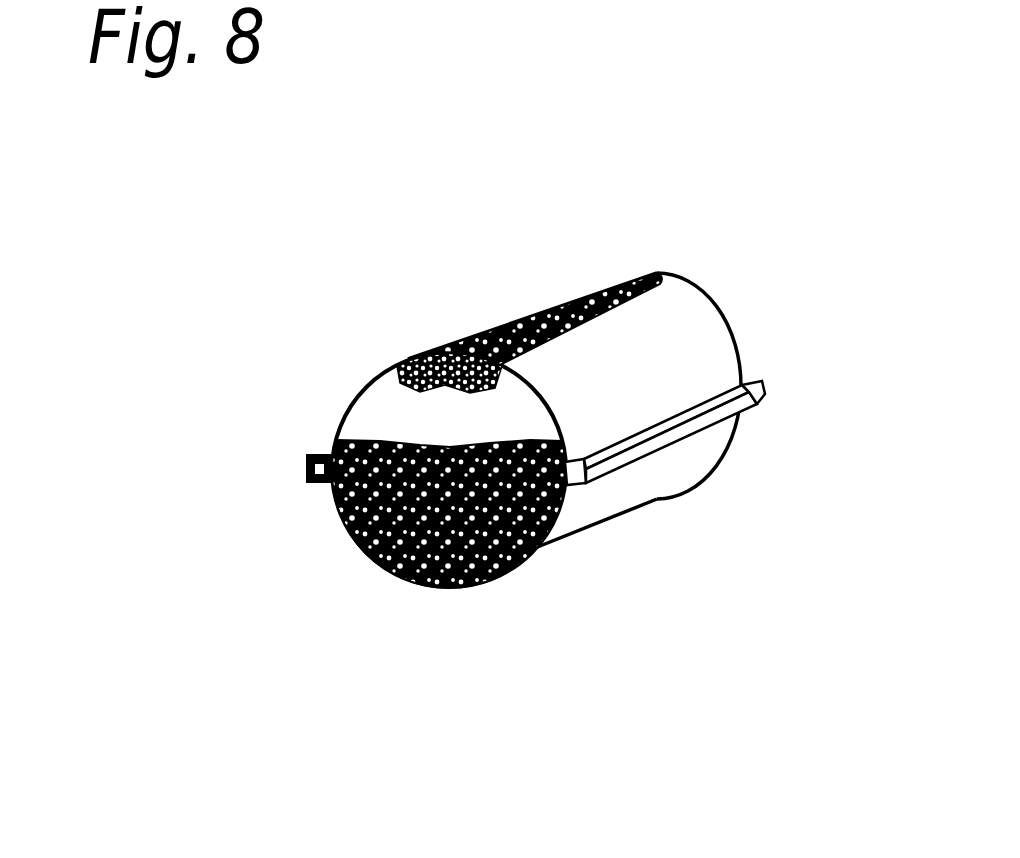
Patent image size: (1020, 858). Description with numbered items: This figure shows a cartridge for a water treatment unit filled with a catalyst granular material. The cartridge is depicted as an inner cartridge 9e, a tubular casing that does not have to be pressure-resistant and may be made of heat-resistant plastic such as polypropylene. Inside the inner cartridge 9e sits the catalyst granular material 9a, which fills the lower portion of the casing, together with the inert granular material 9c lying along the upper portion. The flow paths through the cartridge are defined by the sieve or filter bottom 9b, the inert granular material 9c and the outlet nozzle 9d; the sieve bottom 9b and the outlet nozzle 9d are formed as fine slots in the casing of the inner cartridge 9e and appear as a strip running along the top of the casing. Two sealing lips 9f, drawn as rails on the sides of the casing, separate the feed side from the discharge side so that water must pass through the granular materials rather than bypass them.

The catalyst granular material 9a is at (332, 504).
The sieve or filter bottom 9b is at (637, 217).
The inert granular material 9c is at (442, 348).
The outlet nozzle 9d is at (612, 288).
The inner cartridge 9e is at (357, 393).
The sealing lips 9f is at (578, 488).